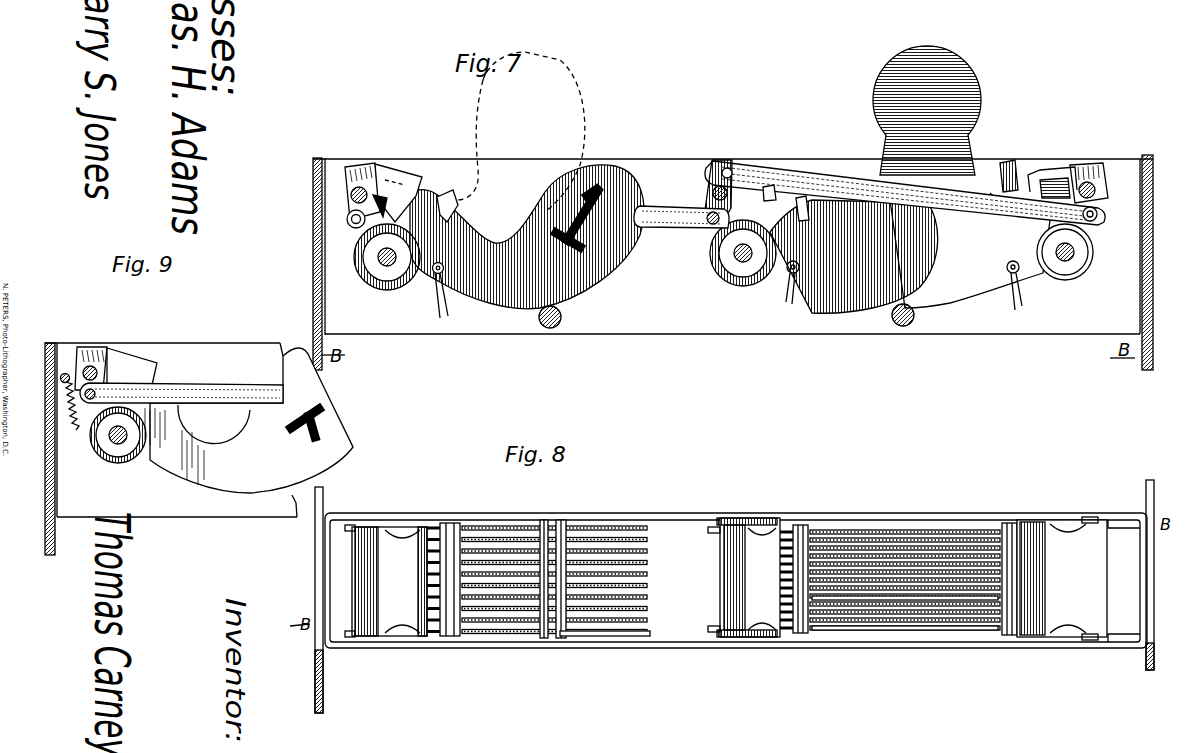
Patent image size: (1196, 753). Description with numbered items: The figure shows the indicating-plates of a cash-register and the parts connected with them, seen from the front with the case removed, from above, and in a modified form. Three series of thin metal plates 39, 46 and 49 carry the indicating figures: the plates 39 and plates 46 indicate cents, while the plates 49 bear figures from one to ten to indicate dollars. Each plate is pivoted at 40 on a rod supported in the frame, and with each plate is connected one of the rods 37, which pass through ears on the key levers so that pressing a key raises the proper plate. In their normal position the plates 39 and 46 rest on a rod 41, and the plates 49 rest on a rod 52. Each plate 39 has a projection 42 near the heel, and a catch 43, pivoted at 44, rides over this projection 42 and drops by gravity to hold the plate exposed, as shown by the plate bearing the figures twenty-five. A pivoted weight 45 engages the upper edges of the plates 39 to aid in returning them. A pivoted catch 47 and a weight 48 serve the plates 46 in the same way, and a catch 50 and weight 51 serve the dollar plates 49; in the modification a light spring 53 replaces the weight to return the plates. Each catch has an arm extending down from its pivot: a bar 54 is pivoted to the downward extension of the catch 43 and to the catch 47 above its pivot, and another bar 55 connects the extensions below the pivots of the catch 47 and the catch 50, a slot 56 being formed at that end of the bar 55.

In FIG. 7, the rod 37 is at (739, 293).
In FIG. 7, the thin metal plate 39 is at (980, 100).
In FIG. 8, the thin metal plate 39 is at (993, 603).
In FIG. 7, the pivot 40 is at (1075, 250).
In FIG. 7, the rod 41 is at (914, 315).
In FIG. 7, the projection 42 is at (1058, 180).
In FIG. 7, the catch 43 is at (1043, 170).
In FIG. 8, the catch 43 is at (1062, 578).
In FIG. 7, the pivot 44 is at (1095, 188).
In FIG. 7, the pivoted weight 45 is at (1005, 165).
In FIG. 8, the pivoted weight 45 is at (1008, 635).
In FIG. 7, the thin metal plate 46 is at (844, 240).
In FIG. 8, the thin metal plate 46 is at (868, 600).
In FIG. 7, the pivoted catch 47 is at (768, 186).
In FIG. 8, the pivoted catch 47 is at (744, 577).
In FIG. 7, the weight 48 is at (800, 197).
In FIG. 8, the weight 48 is at (796, 633).
In FIG. 7, the plate 49 is at (499, 237).
In FIG. 9, the plate 49 is at (221, 420).
In FIG. 8, the plate 49 is at (601, 606).
In FIG. 7, the catch 50 is at (408, 182).
In FIG. 9, the catch 50 is at (127, 356).
In FIG. 8, the catch 50 is at (386, 581).
In FIG. 7, the weight 51 is at (446, 197).
In FIG. 8, the weight 51 is at (453, 636).
In FIG. 7, the rod 52 is at (562, 317).
In FIG. 8, the rod 52 is at (553, 640).
In FIG. 9, the light spring 53 is at (85, 430).
In FIG. 7, the bar 54 is at (905, 193).
In FIG. 8, the bar 54 is at (947, 633).
In FIG. 7, the bar 55 is at (350, 242).
In FIG. 9, the bar 55 is at (181, 393).
In FIG. 8, the bar 55 is at (649, 637).
In FIG. 7, the slot 56 is at (347, 213).
In FIG. 9, the slot 56 is at (104, 393).